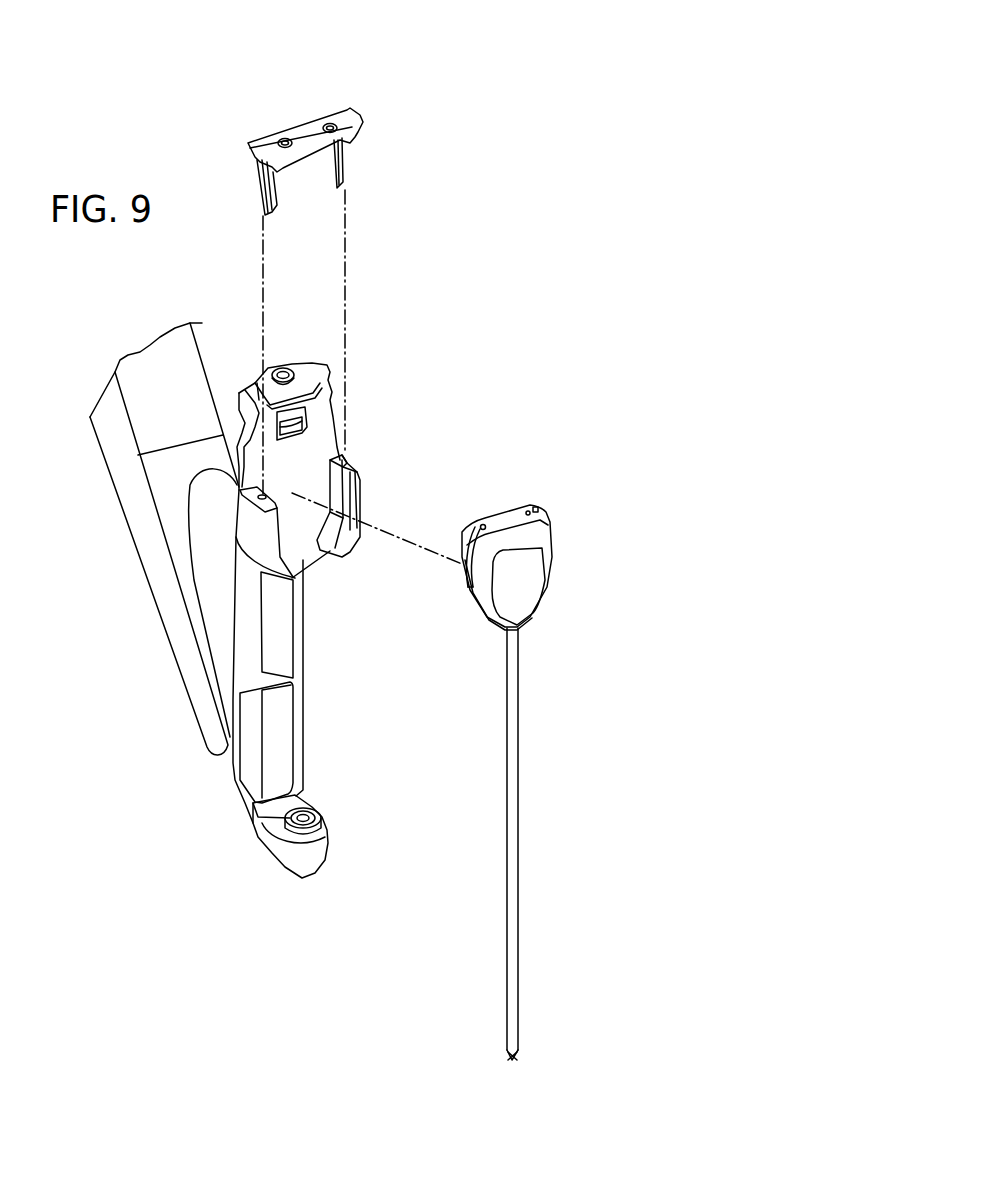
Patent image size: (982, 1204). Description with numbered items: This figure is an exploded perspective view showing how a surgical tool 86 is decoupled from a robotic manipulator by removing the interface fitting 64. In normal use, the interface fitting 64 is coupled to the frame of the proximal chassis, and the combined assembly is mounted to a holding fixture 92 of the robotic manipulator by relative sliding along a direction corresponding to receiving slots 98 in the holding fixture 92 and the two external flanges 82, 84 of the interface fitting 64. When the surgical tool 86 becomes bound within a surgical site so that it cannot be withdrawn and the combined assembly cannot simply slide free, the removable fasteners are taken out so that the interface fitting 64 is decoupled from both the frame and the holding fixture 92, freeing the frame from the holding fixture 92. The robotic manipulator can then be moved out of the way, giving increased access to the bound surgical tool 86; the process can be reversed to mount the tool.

The interface fitting 64 is at (303, 127).
The external flange 82 is at (347, 183).
The external flange 84 is at (262, 208).
The receiving slots 98 is at (269, 497).
The holding fixture 92 is at (358, 507).
The surgical tool 86 is at (557, 755).